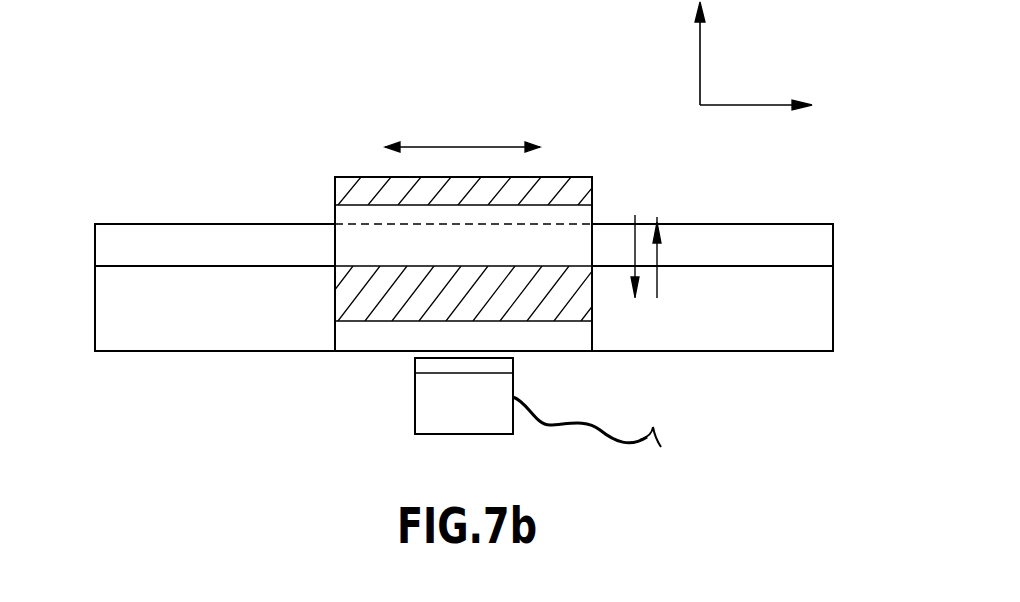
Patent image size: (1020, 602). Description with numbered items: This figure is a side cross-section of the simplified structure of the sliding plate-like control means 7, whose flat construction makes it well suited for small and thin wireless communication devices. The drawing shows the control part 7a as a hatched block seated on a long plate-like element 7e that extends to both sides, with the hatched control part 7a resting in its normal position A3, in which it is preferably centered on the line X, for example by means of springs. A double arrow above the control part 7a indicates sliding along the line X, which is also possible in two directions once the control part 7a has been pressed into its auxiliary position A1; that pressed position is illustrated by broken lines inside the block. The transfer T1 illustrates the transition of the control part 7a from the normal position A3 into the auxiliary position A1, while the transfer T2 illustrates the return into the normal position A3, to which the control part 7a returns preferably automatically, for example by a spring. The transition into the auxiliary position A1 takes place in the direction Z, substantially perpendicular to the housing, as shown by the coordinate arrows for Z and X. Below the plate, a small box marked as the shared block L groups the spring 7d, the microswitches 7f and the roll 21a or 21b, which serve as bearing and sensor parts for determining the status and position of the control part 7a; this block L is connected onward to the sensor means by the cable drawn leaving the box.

The control means 7 is at (480, 118).
The control part 7a is at (347, 178).
The spring 7d is at (442, 402).
The microswitches 7f is at (442, 402).
The vibration plate 7e is at (122, 232).
The roll 21a is at (442, 402).
The roll 21b is at (442, 402).
The auxiliary position A1 is at (583, 220).
The normal position A3 is at (562, 179).
The transfer T1 is at (633, 257).
The transfer T2 is at (657, 255).
The shared block L is at (430, 403).
The direction Z is at (700, 58).
The line X is at (765, 105).